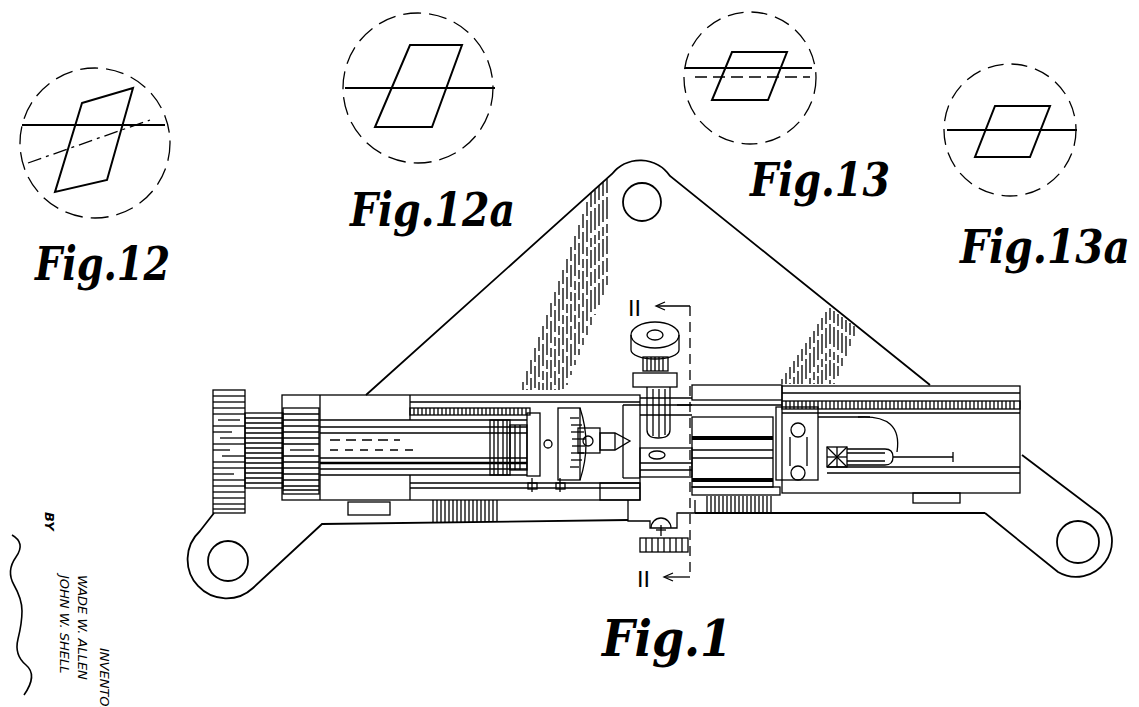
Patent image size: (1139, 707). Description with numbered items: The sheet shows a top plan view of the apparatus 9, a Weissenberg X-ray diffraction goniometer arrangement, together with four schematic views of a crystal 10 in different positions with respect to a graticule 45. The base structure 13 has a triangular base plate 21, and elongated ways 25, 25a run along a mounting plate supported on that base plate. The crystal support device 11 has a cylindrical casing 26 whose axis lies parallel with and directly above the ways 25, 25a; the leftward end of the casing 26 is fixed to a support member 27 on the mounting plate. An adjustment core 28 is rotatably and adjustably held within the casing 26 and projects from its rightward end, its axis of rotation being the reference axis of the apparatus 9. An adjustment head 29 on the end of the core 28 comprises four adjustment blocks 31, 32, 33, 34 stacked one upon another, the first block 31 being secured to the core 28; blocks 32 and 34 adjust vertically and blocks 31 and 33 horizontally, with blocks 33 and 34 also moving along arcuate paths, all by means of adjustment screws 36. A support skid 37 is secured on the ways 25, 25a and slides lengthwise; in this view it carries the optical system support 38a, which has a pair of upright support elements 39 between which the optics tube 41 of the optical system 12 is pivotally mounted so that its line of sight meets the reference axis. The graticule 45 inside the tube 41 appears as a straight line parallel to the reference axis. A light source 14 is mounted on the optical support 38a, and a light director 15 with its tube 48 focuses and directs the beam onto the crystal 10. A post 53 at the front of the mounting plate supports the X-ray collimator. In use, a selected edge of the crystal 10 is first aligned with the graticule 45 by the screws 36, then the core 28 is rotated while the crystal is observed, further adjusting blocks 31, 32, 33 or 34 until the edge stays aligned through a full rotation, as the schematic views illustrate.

In FIG. 1, the apparatus 9 is at (836, 293).
In FIG. 12, the crystal 10 is at (118, 115).
In FIG. 12A, the crystal 10 is at (450, 60).
In FIG. 13, the crystal 10 is at (773, 58).
In FIG. 13A, the crystal 10 is at (1037, 112).
In FIG. 1, the crystal support device 11 is at (392, 489).
In FIG. 1, the optical system 12 is at (630, 370).
In FIG. 1, the base structure 13 is at (880, 517).
In FIG. 1, the light source 14 is at (851, 446).
In FIG. 1, the light director 15 is at (713, 489).
In FIG. 1, the triangular base plate 21 is at (720, 257).
In FIG. 1, the elongated way 25 is at (960, 397).
In FIG. 1, the elongated way 25a is at (977, 480).
In FIG. 1, the cylindrical casing 26 is at (348, 440).
In FIG. 1, the support member 27 is at (301, 403).
In FIG. 1, the adjustment core 28 is at (498, 478).
In FIG. 1, the adjustment head 29 is at (545, 402).
In FIG. 1, the adjustment block 31 is at (538, 480).
In FIG. 1, the adjustment block 32 is at (562, 410).
In FIG. 1, the adjustment block 33 is at (592, 428).
In FIG. 1, the adjustment block 34 is at (608, 452).
In FIG. 1, the adjustment screw 36 is at (548, 438).
In FIG. 1, the support skid 37 is at (717, 397).
In FIG. 1, the optical system support 38a is at (630, 485).
In FIG. 1, the upright support element 39 is at (625, 410).
In FIG. 1, the optics tube 41 is at (658, 407).
In FIG. 12, the graticule 45 is at (150, 122).
In FIG. 12A, the graticule 45 is at (488, 84).
In FIG. 13, the graticule 45 is at (805, 63).
In FIG. 13A, the graticule 45 is at (1075, 120).
In FIG. 1, the tube 48 is at (678, 458).
In FIG. 1, the post 53 is at (653, 533).